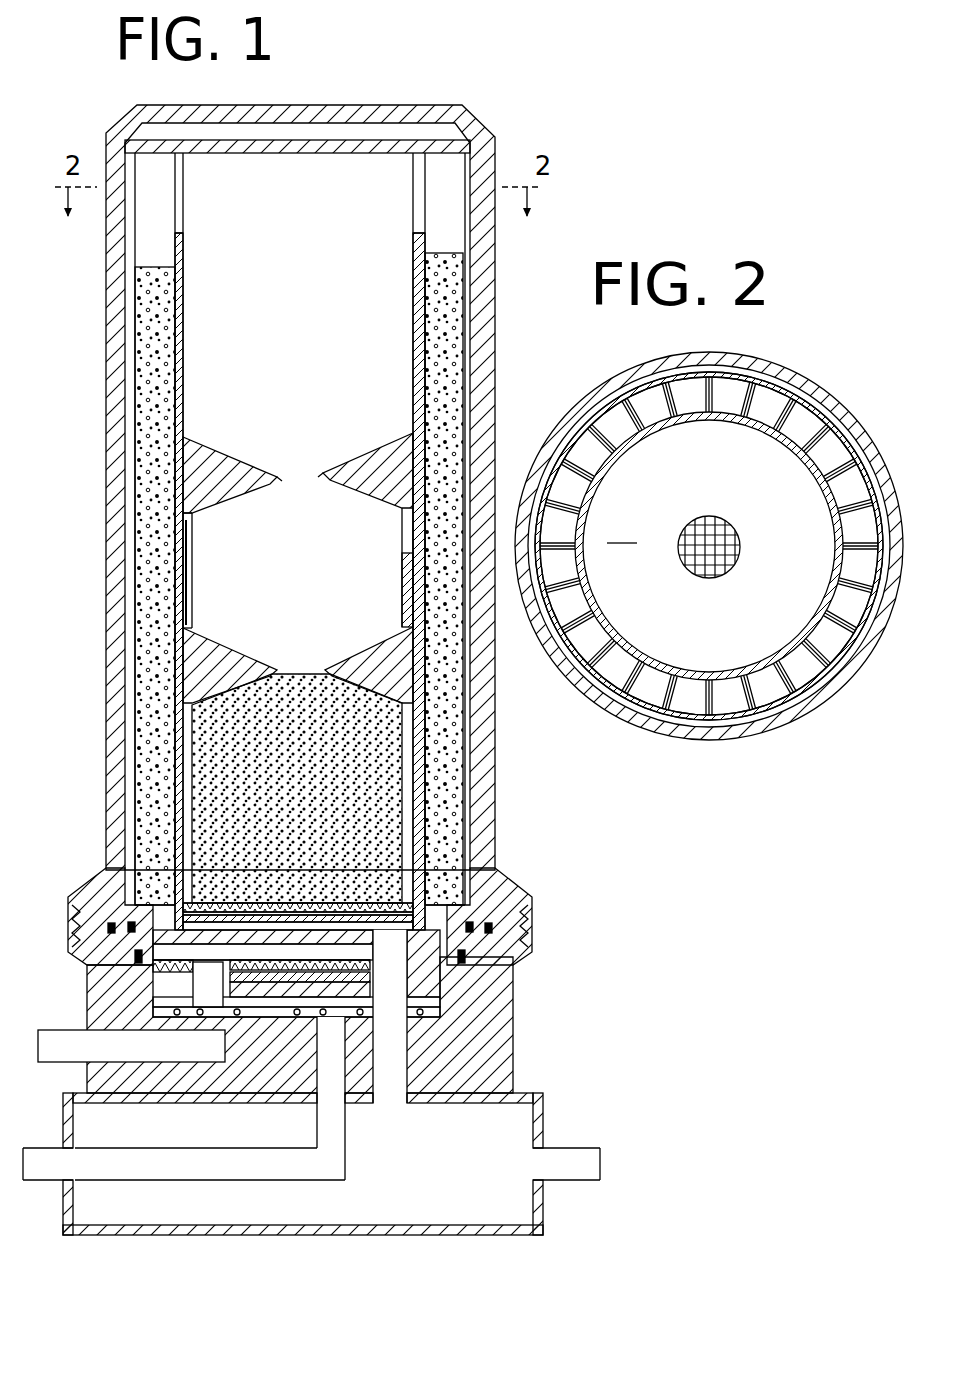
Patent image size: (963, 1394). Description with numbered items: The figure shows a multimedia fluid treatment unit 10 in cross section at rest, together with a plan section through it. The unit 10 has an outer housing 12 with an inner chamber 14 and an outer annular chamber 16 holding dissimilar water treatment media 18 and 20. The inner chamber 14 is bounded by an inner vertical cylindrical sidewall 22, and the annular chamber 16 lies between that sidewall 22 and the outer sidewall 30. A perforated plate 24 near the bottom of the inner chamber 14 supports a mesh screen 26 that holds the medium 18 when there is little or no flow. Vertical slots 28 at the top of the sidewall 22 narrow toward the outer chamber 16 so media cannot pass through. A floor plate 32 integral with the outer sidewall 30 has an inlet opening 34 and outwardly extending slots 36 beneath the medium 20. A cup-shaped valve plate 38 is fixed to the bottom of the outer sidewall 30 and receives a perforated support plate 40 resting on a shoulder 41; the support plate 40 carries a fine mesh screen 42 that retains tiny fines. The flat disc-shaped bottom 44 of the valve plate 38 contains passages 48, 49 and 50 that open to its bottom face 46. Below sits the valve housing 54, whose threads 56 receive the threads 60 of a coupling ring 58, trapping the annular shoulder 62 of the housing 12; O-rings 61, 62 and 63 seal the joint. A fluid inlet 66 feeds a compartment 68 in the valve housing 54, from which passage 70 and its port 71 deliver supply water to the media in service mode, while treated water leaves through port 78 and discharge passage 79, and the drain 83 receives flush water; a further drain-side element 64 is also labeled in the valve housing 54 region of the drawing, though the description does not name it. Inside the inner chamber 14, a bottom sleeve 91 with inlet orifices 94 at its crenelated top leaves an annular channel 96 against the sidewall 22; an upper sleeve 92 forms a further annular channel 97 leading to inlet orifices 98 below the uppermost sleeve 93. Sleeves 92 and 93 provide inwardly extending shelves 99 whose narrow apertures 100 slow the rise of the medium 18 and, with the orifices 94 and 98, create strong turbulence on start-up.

In FIG. 1, the multimedia fluid treatment unit 10 is at (86, 385).
In FIG. 1, the outer housing 12 is at (497, 795).
In FIG. 2, the outer housing 12 is at (745, 730).
In FIG. 1, the inner chamber 14 is at (192, 272).
In FIG. 2, the inner chamber 14 is at (660, 705).
In FIG. 1, the outer annular chamber 16 is at (140, 213).
In FIG. 2, the outer annular chamber 16 is at (805, 672).
In FIG. 1, the water treatment medium 18 is at (207, 775).
In FIG. 1, the water treatment medium 20 is at (152, 655).
In FIG. 1, the inner vertical cylindrical sidewall 22 is at (185, 366).
In FIG. 2, the inner vertical cylindrical sidewall 22 is at (620, 680).
In FIG. 1, the perforated plate 24 is at (316, 925).
In FIG. 1, the mesh screen 26 is at (287, 900).
In FIG. 2, the mesh screen 26 is at (712, 530).
In FIG. 1, the vertical slots 28 is at (185, 195).
In FIG. 2, the vertical slots 28 is at (738, 668).
In FIG. 1, the outer sidewall 30 is at (128, 313).
In FIG. 2, the outer sidewall 30 is at (850, 652).
In FIG. 1, the floor plate 32 is at (243, 930).
In FIG. 1, the opening 34 is at (386, 940).
In FIG. 1, the outwardly extending slots 36 is at (165, 930).
In FIG. 2, the outwardly extending slots 36 is at (600, 632).
In FIG. 1, the valve plate 38 is at (472, 984).
In FIG. 1, the perforated support plate 40 is at (270, 1013).
In FIG. 1, the shoulder 41 is at (193, 992).
In FIG. 1, the fine mesh screen 42 is at (280, 997).
In FIG. 1, the flat disc shaped bottom 44 is at (217, 1020).
In FIG. 1, the bottom face 46 is at (207, 1010).
In FIG. 1, the passage 48 is at (400, 1002).
In FIG. 1, the passage 49 is at (297, 1010).
In FIG. 1, the passage 50 is at (200, 995).
In FIG. 1, the valve housing 54 is at (520, 1078).
In FIG. 1, the threads 56 is at (528, 938).
In FIG. 1, the coupling ring 58 is at (517, 885).
In FIG. 1, the threads 60 is at (527, 905).
In FIG. 1, the O-ring 61 is at (87, 921).
In FIG. 1, the annular shoulder 62 is at (128, 920).
In FIG. 1, the O-ring 63 is at (130, 955).
In FIG. 1, the drain passage 64 is at (190, 1027).
In FIG. 1, the fluid inlet 66 is at (580, 1182).
In FIG. 1, the compartment 68 is at (487, 1204).
In FIG. 1, the passage 70 is at (417, 1100).
In FIG. 1, the port 71 is at (390, 1008).
In FIG. 1, the port 78 is at (315, 1100).
In FIG. 1, the discharge passage 79 is at (185, 1170).
In FIG. 1, the drain 83 is at (70, 1060).
In FIG. 1, the bottom sleeve 91 is at (197, 812).
In FIG. 1, the upper sleeve 92 is at (192, 596).
In FIG. 1, the uppermost sleeve 93 is at (190, 538).
In FIG. 1, the inlet orifices 94 is at (190, 748).
In FIG. 1, the annular channel 96 is at (183, 820).
In FIG. 1, the annular channel 97 is at (182, 580).
In FIG. 1, the inlet orifices 98 is at (186, 558).
In FIG. 1, the shelves 99 is at (233, 462).
In FIG. 2, the shelves 99 is at (621, 529).
In FIG. 1, the apertures 100 is at (270, 480).
In FIG. 2, the apertures 100 is at (682, 553).